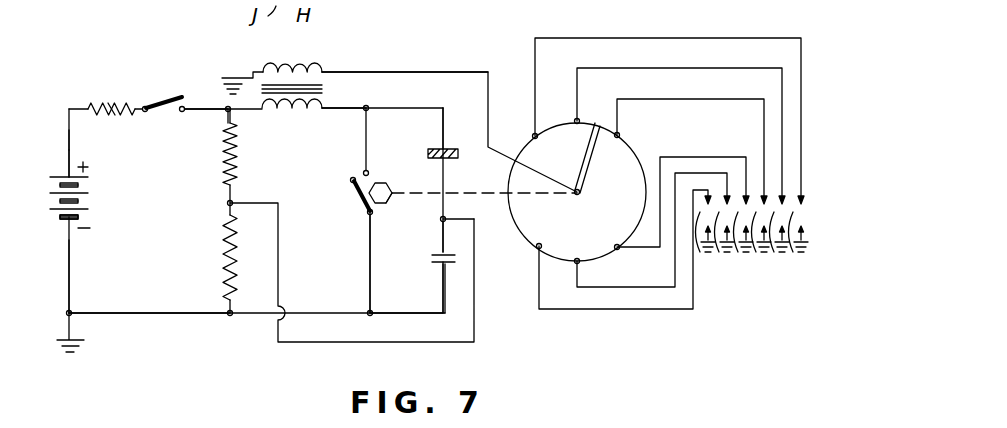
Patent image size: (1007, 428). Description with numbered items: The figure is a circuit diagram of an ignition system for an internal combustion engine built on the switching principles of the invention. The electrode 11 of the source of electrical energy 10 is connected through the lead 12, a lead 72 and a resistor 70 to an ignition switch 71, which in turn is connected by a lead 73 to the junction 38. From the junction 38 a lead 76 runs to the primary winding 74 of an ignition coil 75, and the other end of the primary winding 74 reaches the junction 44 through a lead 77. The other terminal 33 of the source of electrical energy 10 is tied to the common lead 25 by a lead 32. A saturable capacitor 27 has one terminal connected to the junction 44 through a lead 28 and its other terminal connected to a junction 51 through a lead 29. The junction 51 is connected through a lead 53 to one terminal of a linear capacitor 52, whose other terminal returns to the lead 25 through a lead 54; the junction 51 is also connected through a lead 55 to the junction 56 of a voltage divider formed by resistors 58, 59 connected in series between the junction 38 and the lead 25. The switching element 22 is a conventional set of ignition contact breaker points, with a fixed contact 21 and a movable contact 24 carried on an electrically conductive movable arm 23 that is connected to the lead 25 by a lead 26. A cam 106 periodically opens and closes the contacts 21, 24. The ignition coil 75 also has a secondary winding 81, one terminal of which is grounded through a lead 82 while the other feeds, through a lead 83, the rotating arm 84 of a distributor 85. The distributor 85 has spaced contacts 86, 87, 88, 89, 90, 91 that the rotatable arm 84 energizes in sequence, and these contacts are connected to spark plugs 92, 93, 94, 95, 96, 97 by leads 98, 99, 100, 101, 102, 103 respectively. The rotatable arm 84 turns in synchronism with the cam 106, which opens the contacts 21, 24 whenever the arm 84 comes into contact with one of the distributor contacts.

The source of electrical energy 10 is at (88, 205).
The electrode 11 is at (68, 172).
The lead 12 is at (68, 145).
The contact 21 is at (364, 171).
The electrical switching element 22 is at (386, 181).
The movable arm 23 is at (360, 199).
The contact 24 is at (351, 181).
The lead 25 is at (150, 316).
The lead 26 is at (368, 273).
The saturable capacitor 27 is at (450, 148).
The lead 28 is at (436, 107).
The lead 29 is at (447, 192).
The lead 32 is at (72, 285).
The terminal 33 is at (66, 222).
The junction 38 is at (226, 111).
The junction 44 is at (368, 107).
The junction 51 is at (446, 218).
The linear capacitor 52 is at (431, 259).
The lead 53 is at (442, 238).
The lead 54 is at (442, 302).
The lead 55 is at (382, 343).
The junction 56 is at (233, 201).
The resistor 58 is at (238, 148).
The resistor 59 is at (226, 270).
The resistor 70 is at (110, 112).
The ignition switch 71 is at (165, 97).
The lead 72 is at (78, 108).
The lead 73 is at (213, 105).
The primary winding 74 is at (287, 112).
The ignition coil 75 is at (318, 64).
The lead 76 is at (240, 110).
The lead 77 is at (350, 101).
The secondary winding 81 is at (291, 64).
The lead 82 is at (253, 68).
The lead 83 is at (424, 72).
The rotating arm 84 is at (590, 175).
The distributor 85 is at (524, 228).
The distributor contact 86 is at (537, 133).
The distributor contact 87 is at (579, 120).
The distributor contact 88 is at (620, 134).
The distributor contact 89 is at (620, 248).
The distributor contact 90 is at (580, 262).
The distributor contact 91 is at (542, 250).
The spark plug 92 is at (808, 218).
The spark plug 93 is at (786, 254).
The spark plug 94 is at (766, 255).
The spark plug 95 is at (748, 254).
The spark plug 96 is at (727, 255).
The spark plug 97 is at (710, 254).
The lead 98 is at (760, 37).
The lead 99 is at (728, 68).
The lead 100 is at (694, 98).
The lead 101 is at (687, 156).
The lead 102 is at (610, 288).
The lead 103 is at (622, 310).
The cam 106 is at (389, 205).